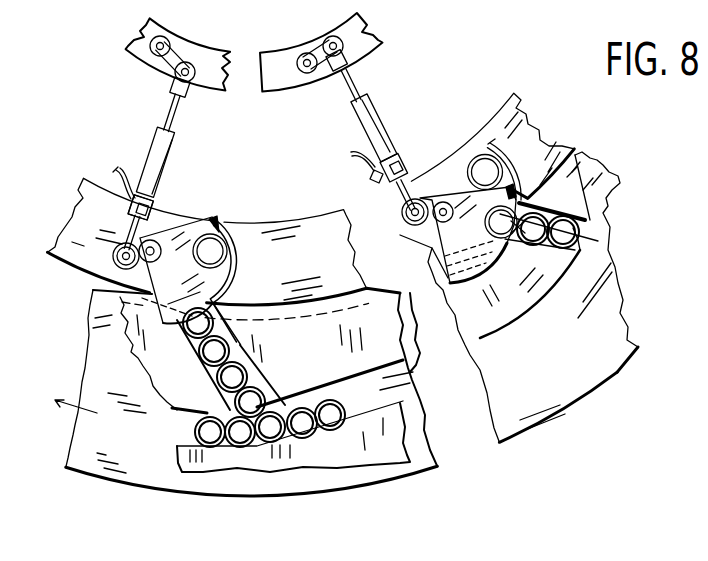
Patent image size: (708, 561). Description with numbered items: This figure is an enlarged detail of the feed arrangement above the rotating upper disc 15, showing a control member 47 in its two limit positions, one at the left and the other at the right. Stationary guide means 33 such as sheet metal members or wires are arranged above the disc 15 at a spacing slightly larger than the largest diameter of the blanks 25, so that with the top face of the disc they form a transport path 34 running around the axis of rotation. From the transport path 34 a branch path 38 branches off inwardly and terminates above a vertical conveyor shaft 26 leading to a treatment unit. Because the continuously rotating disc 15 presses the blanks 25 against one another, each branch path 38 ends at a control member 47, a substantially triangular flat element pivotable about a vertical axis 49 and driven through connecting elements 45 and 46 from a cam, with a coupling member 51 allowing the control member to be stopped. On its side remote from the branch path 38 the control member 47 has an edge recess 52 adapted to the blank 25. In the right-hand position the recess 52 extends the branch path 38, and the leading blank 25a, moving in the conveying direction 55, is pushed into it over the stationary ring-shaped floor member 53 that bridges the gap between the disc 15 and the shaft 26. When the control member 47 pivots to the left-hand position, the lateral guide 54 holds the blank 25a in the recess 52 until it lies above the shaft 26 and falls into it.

The upper disc 15 is at (96, 360).
The blank 25 is at (214, 246).
The leading blank 25a is at (505, 222).
The vertical conveyor shaft 26 is at (483, 168).
The stationary guide means 33 is at (404, 353).
The transport path 34 is at (293, 462).
The branch path 38 is at (236, 360).
The connecting element 45 is at (173, 58).
The connecting element 46 is at (170, 108).
The control member 47 is at (187, 232).
The vertical axis 49 is at (151, 243).
The coupling member 51 is at (128, 207).
The edge recess 52 is at (213, 220).
The bottom or floor member 53 is at (322, 238).
The lateral guide 54 is at (233, 282).
The direction of conveying movement 55 is at (587, 257).